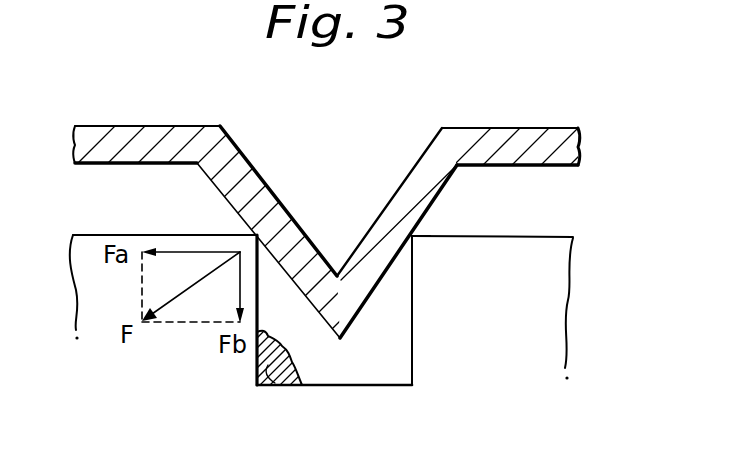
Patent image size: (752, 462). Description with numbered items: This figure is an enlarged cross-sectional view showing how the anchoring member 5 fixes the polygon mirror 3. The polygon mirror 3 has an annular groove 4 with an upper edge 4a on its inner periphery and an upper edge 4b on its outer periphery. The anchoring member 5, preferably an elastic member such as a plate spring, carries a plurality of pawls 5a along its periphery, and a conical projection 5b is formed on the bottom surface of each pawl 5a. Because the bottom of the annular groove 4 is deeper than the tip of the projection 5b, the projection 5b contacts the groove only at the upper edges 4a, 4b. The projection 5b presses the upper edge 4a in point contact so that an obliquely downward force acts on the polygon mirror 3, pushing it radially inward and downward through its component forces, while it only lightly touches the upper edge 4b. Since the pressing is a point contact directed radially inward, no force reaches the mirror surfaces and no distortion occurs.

The polygon mirror 3 is at (377, 206).
The annular groove 4 is at (374, 385).
The upper edge of the inner periphery of the annular groove 4a is at (255, 234).
The upper edge of the outer periphery of the annular groove 4b is at (415, 235).
The anchoring member 5 is at (367, 200).
The pawl 5a is at (497, 136).
The projection 5b is at (288, 220).